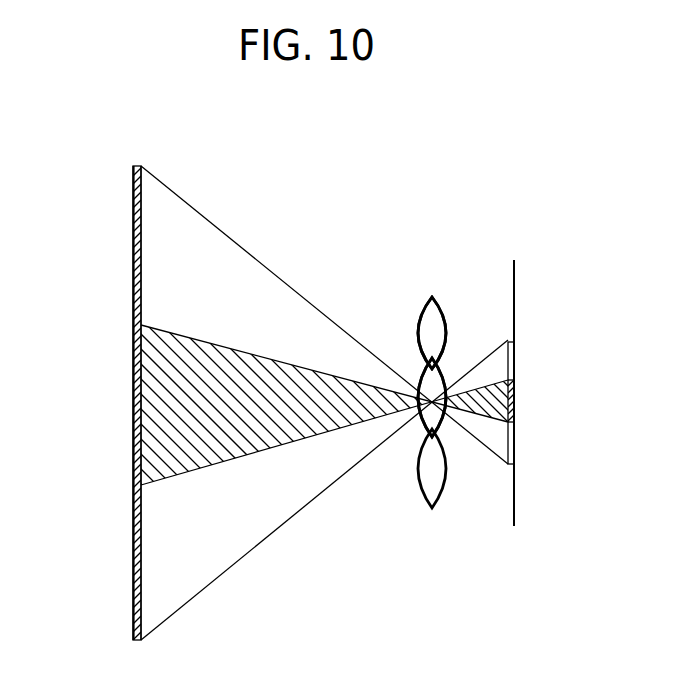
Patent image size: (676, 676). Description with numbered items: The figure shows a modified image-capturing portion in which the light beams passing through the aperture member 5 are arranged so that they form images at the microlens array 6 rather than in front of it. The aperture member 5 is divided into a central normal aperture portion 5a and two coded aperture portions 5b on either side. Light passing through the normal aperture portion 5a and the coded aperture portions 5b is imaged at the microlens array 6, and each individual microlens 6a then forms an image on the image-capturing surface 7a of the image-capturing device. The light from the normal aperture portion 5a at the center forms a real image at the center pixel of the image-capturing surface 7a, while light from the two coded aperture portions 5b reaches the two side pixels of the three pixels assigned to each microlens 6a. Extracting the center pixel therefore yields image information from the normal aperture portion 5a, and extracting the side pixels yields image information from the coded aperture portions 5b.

The aperture member 5 is at (150, 155).
The normal aperture portion 5a is at (128, 326).
The coded aperture portion 5b is at (128, 167).
The microlens array 6 is at (412, 275).
The microlens 6a is at (446, 305).
The image-capturing surface 7a is at (513, 284).